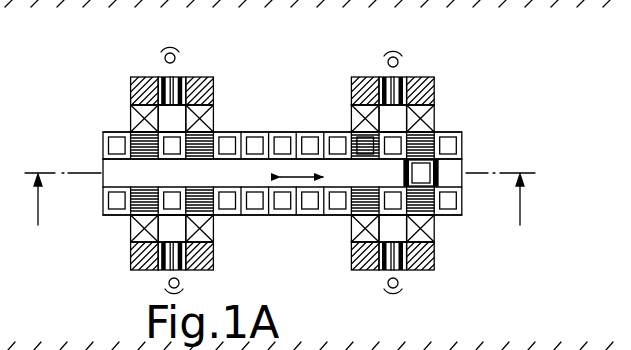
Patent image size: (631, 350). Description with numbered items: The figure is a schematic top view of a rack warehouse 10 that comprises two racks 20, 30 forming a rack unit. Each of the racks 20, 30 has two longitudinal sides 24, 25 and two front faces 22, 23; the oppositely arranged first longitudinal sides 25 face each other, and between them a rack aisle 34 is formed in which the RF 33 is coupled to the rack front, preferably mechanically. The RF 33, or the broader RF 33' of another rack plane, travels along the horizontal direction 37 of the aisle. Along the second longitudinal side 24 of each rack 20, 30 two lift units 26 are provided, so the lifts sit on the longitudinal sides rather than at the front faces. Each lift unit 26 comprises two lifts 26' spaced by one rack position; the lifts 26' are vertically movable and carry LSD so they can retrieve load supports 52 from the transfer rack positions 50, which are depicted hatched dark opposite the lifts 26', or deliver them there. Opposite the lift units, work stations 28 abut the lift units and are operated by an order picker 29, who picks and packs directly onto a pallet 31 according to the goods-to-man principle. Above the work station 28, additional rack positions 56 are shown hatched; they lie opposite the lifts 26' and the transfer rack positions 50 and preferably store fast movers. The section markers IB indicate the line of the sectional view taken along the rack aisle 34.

The rack warehouse 10 is at (507, 107).
The rack 20 is at (300, 179).
The front face 22 is at (101, 140).
The front face 23 is at (464, 160).
The second longitudinal side 24 is at (260, 129).
The first longitudinal side 25 is at (217, 162).
The lift unit 26 is at (284, 147).
The lift 26' is at (280, 189).
The work station 28 is at (127, 87).
The order picker 29 is at (398, 52).
The rack 30 is at (473, 207).
The pallet 31 is at (406, 278).
The RF 33 is at (396, 176).
The RF 33' is at (310, 325).
The rack aisle 34 is at (257, 186).
The horizontal direction 37 is at (304, 170).
The transfer rack position 50 is at (147, 186).
The load support 52 is at (113, 207).
The additional rack position 56 is at (427, 78).
The section line IB is at (285, 215).